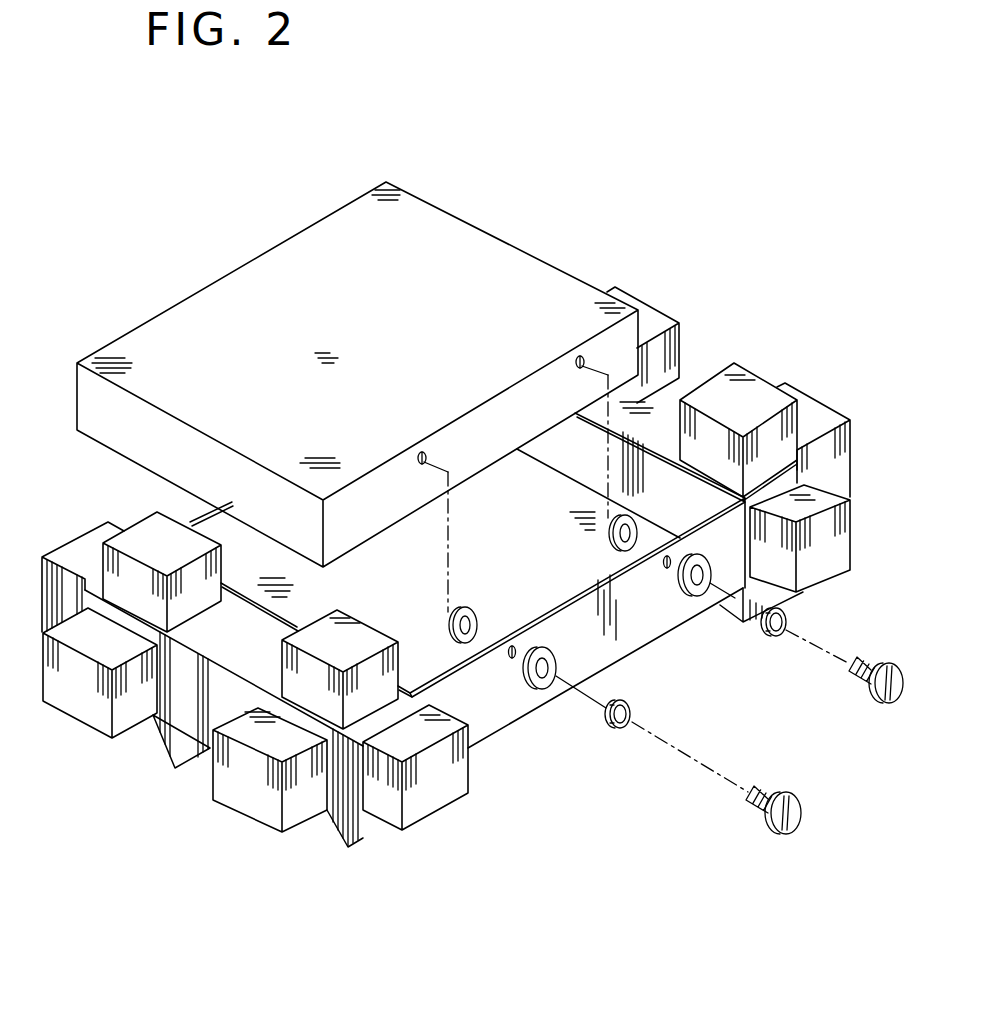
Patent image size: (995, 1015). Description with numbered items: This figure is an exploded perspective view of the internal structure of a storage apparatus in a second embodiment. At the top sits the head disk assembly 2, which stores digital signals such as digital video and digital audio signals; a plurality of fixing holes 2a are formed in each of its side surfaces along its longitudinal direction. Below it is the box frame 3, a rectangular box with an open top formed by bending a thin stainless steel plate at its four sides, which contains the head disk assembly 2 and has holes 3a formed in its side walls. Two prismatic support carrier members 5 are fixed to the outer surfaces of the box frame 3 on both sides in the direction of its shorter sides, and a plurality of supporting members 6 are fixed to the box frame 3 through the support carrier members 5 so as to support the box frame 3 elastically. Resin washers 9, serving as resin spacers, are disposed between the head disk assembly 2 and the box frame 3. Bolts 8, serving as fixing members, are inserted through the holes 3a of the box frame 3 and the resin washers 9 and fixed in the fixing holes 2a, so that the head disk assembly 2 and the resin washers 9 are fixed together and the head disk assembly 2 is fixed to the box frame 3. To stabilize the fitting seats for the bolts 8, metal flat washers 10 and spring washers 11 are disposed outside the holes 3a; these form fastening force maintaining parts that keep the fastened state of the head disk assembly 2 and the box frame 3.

The head disk assembly 2 is at (495, 248).
The fixing holes 2a is at (419, 464).
The box frame 3 is at (630, 637).
The holes 3a is at (512, 657).
The support carrier members 5 is at (677, 388).
The supporting members 6 is at (82, 700).
The bolts 8 is at (775, 820).
The resin washers 9 is at (473, 613).
The flat washers 10 is at (547, 650).
The spring washers 11 is at (630, 730).